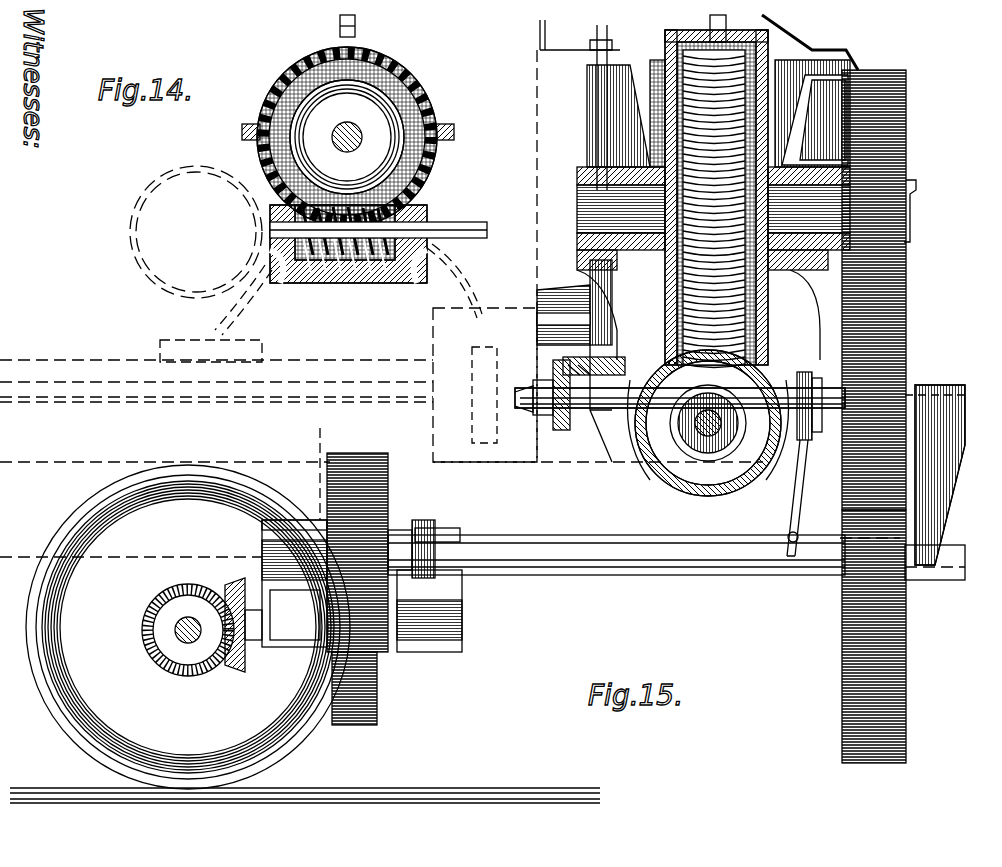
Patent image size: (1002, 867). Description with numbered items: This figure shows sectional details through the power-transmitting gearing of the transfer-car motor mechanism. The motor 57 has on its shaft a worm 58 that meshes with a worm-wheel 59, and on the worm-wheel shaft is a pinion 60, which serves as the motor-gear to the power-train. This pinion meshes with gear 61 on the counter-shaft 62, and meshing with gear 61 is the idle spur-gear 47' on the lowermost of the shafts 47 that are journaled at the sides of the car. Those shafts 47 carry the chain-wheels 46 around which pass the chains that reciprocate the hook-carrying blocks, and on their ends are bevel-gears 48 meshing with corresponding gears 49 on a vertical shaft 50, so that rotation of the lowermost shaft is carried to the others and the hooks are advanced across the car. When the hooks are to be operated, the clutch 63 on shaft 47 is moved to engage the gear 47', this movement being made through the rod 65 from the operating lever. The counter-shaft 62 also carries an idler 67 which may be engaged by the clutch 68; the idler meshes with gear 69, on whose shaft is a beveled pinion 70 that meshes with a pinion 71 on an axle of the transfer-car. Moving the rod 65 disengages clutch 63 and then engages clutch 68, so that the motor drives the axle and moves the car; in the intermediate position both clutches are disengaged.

In FIG. 15, the chain-wheels 46 is at (485, 385).
In FIG. 15, the shafts 47 is at (465, 398).
In FIG. 14, the spur-gear 47' is at (172, 250).
In FIG. 15, the spur-gear 47' is at (935, 459).
In FIG. 15, the bevel-gears 48 is at (565, 430).
In FIG. 15, the gears 49 is at (563, 355).
In FIG. 15, the vertical shaft 50 is at (590, 272).
In FIG. 15, the motor 57 is at (583, 128).
In FIG. 14, the worm 58 is at (412, 230).
In FIG. 14, the worm-wheel 59 is at (348, 121).
In FIG. 15, the worm-wheel 59 is at (680, 52).
In FIG. 15, the pinion 60 is at (906, 174).
In FIG. 14, the gear 61 is at (456, 300).
In FIG. 15, the gear 61 is at (904, 634).
In FIG. 15, the counter-shaft 62 is at (785, 565).
In FIG. 15, the clutch 63 is at (805, 391).
In FIG. 15, the rod 65 is at (540, 535).
In FIG. 15, the idler 67 is at (392, 492).
In FIG. 15, the clutch 68 is at (435, 522).
In FIG. 15, the gear 69 is at (377, 693).
In FIG. 15, the beveled pinion 70 is at (235, 667).
In FIG. 15, the pinion 71 is at (180, 658).